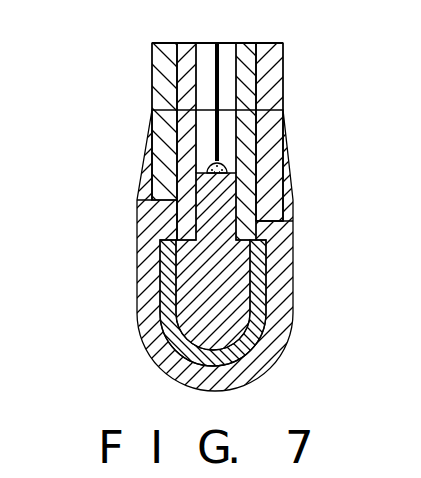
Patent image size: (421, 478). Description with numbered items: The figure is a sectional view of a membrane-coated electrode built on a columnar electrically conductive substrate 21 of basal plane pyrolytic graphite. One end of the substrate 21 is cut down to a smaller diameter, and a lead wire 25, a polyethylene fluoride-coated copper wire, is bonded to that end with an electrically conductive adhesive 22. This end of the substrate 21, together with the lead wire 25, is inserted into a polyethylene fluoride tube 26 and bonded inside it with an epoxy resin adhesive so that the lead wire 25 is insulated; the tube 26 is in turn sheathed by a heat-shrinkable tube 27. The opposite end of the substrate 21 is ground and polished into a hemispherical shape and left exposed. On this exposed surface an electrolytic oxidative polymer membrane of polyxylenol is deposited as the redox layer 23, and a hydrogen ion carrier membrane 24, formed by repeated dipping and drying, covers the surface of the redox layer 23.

The electrically conductive substrate 21 is at (278, 279).
The electrically conductive adhesive 22 is at (222, 160).
The redox layer 23 is at (279, 327).
The hydrogen ion carrier membrane 24 is at (266, 357).
The lead wire 25 is at (222, 89).
The polyethylene fluoride tube 26 is at (177, 91).
The heat-shrinkable tube 27 is at (160, 133).